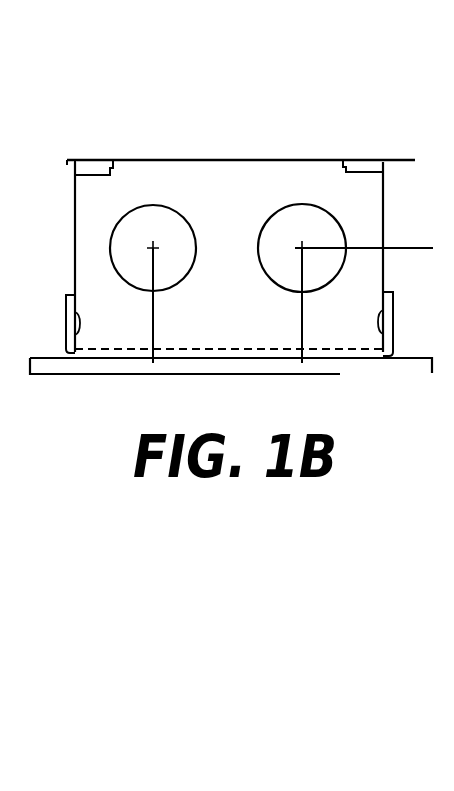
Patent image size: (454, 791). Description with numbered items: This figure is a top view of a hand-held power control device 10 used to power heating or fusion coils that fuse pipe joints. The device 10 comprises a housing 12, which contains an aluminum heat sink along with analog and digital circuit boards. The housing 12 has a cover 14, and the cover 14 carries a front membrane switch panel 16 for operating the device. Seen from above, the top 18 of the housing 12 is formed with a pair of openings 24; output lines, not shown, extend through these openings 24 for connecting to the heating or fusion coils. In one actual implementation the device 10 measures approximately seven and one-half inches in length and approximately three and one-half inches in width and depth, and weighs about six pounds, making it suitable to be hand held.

The power control device 10 is at (223, 259).
The housing 12 is at (383, 207).
The cover 14 is at (107, 358).
The front membrane switch panel 16 is at (47, 359).
The top 18 is at (322, 176).
The openings 24 is at (270, 212).